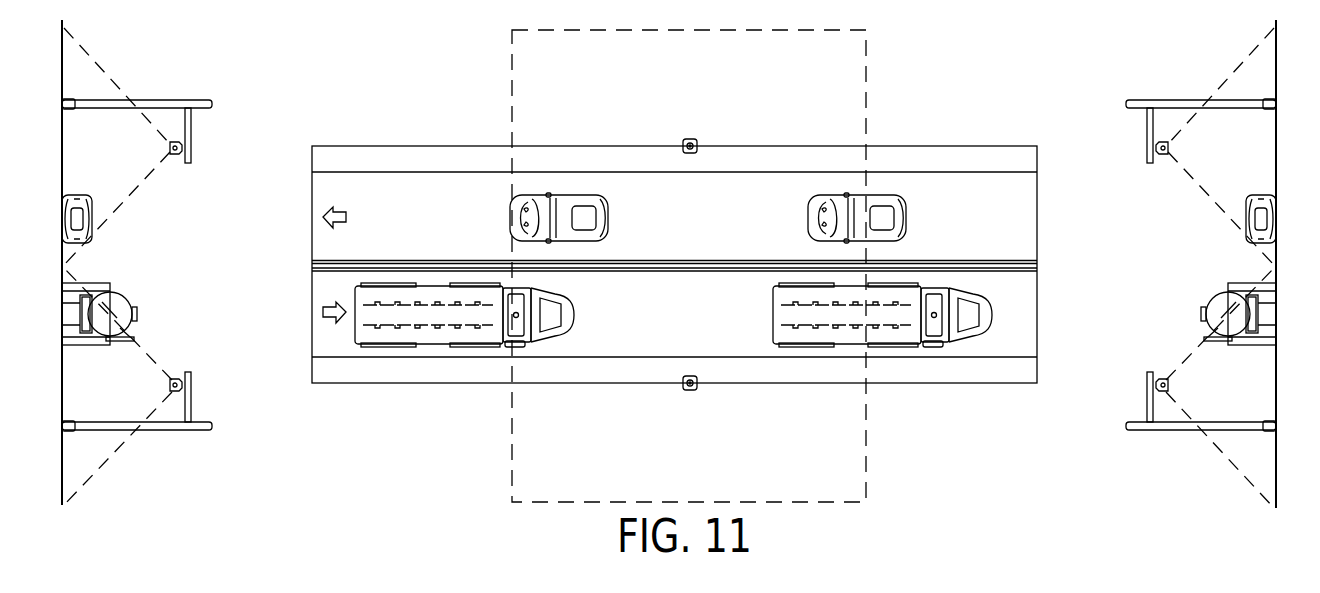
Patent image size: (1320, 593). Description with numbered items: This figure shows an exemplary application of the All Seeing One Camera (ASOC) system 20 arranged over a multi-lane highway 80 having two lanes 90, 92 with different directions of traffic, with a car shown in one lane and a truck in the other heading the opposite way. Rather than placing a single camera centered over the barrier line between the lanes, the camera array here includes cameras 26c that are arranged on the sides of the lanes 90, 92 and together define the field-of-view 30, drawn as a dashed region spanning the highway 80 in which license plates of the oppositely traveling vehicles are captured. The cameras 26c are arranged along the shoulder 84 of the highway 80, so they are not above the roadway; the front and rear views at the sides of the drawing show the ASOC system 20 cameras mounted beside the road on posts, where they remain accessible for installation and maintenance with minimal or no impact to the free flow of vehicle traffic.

The All Seeing One Camera (ASOC) system 20 is at (690, 397).
The cameras 26c is at (690, 137).
The field-of-view 30 is at (546, 97).
The highway 80 is at (629, 230).
The shoulder 84 is at (343, 160).
The lane 90 is at (371, 199).
The lane 92 is at (346, 337).